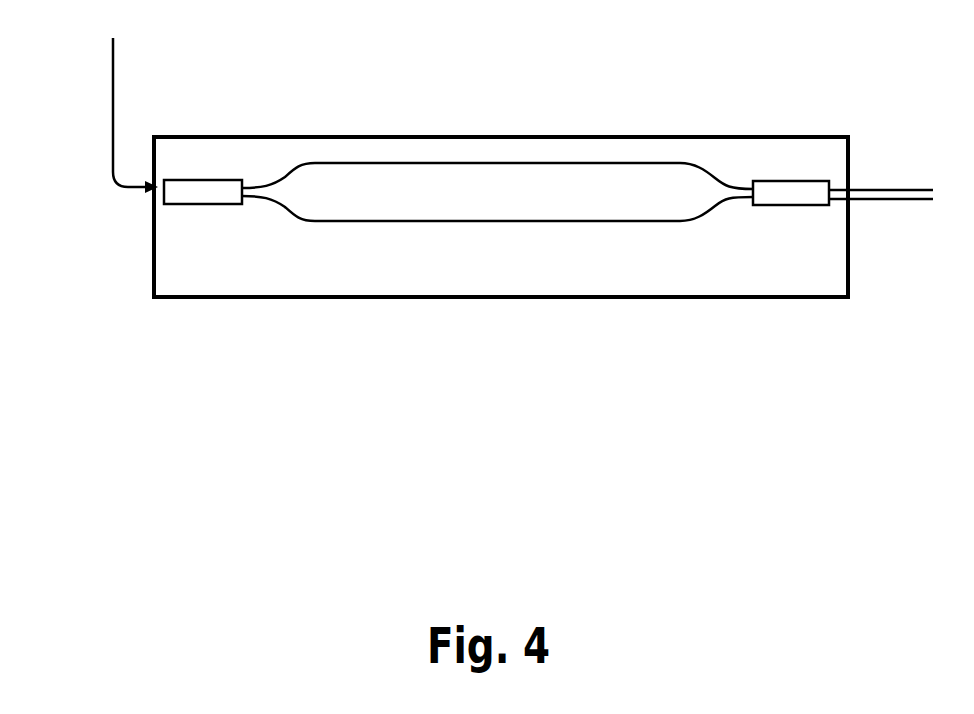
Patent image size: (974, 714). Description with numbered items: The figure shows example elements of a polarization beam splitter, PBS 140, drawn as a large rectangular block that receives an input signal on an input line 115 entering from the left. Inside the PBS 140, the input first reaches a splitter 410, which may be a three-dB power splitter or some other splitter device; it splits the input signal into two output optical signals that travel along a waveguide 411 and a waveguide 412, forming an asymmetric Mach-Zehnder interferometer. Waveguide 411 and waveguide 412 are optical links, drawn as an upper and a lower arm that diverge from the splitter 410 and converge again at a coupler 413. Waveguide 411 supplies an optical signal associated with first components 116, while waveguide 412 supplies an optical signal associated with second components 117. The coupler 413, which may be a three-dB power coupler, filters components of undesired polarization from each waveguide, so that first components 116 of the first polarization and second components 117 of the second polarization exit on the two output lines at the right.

The input optical fiber 115 is at (113, 122).
The PBS 140 is at (315, 137).
The splitter 410 is at (192, 179).
The waveguide 411 is at (435, 163).
The waveguide 412 is at (460, 222).
The coupler 413 is at (787, 181).
The first components 116 is at (875, 188).
The second components 117 is at (907, 202).